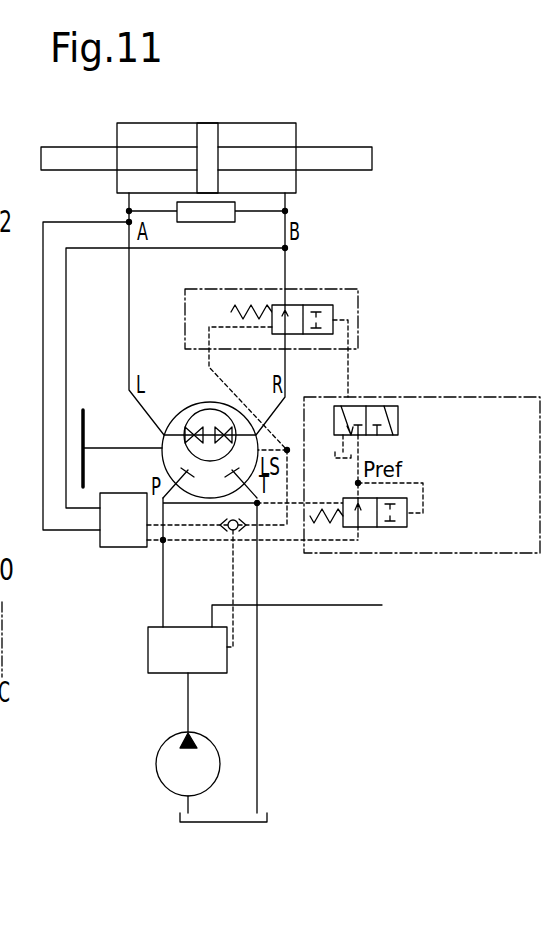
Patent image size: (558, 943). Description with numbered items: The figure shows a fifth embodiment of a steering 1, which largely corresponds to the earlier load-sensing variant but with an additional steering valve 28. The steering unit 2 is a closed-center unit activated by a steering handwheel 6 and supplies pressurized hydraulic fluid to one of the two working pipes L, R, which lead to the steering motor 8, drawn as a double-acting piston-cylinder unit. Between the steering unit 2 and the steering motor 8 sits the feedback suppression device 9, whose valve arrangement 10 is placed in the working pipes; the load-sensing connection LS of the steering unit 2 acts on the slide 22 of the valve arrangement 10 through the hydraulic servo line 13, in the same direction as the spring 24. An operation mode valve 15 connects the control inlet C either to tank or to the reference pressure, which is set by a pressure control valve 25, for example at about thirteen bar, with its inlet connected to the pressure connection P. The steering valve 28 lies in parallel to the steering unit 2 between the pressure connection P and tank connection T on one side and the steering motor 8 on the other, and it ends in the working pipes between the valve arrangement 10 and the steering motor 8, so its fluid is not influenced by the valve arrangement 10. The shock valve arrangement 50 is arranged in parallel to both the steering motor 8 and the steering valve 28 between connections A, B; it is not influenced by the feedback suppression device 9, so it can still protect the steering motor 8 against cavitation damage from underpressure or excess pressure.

The steering 1 is at (337, 119).
The steering motor 8 is at (263, 123).
The shock valve arrangement 50 is at (232, 216).
The steering unit 2 is at (164, 438).
The steering handwheel 6 is at (80, 432).
The valve arrangement 10 is at (358, 302).
The spring 24 is at (234, 304).
The slide 22 is at (294, 311).
The hydraulic servo line 13 is at (208, 363).
The feedback suppression device 9 is at (407, 367).
The operation mode valve 15 is at (405, 420).
The pressure control valve 25 is at (405, 530).
The steering valve 28 is at (125, 547).